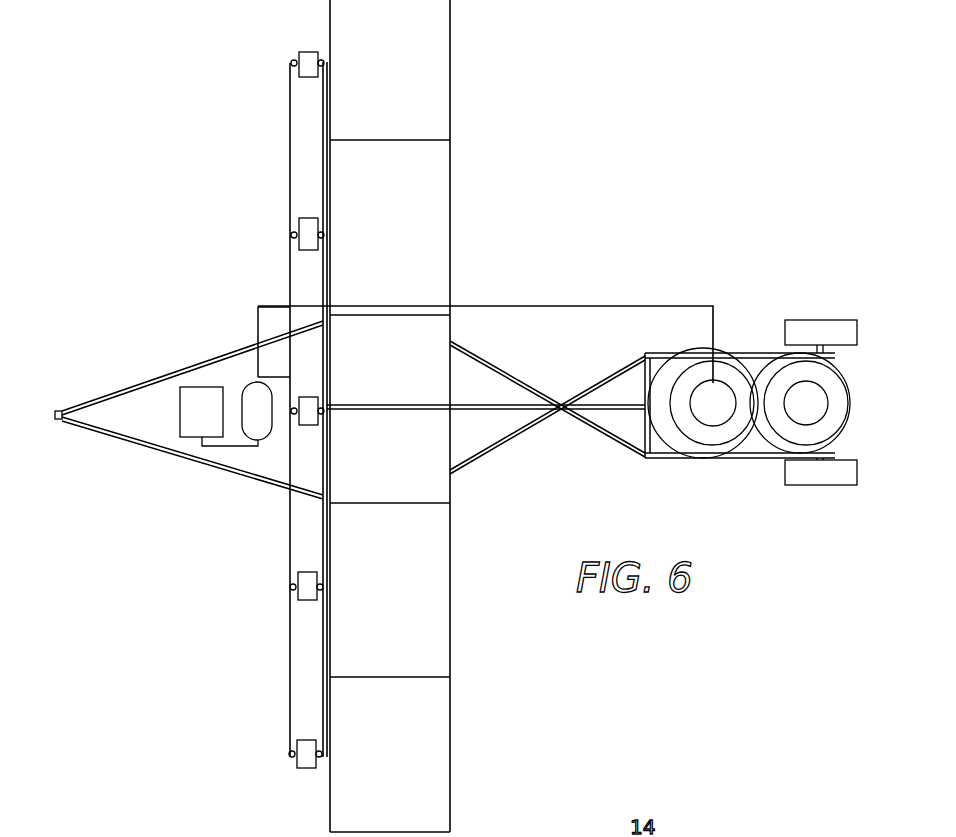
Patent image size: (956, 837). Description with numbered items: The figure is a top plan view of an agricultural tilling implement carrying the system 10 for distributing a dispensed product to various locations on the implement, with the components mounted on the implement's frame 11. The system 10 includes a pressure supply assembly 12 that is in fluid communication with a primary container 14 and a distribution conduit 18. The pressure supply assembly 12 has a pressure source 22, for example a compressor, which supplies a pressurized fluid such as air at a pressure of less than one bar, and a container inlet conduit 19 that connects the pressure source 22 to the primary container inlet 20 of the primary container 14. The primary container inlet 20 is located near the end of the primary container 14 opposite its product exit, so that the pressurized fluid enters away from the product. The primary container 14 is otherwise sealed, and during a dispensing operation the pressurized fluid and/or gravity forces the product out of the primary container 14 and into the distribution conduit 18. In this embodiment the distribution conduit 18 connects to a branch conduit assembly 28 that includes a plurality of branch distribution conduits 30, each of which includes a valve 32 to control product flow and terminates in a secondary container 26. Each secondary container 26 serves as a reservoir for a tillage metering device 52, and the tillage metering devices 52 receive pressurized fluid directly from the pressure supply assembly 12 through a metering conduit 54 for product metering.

The system 10 is at (664, 265).
The frame 11 is at (486, 457).
The pressure supply assembly 12 is at (243, 370).
The primary container 14 is at (735, 366).
The distribution conduit 18 is at (500, 405).
The container inlet conduit 19 is at (522, 306).
The primary container inlet 20 is at (712, 382).
The pressure source 22 is at (178, 405).
The secondary container 26 is at (305, 77).
The branch conduit assembly 28 is at (343, 396).
The branch distribution conduits 30 is at (322, 205).
The valve 32 is at (322, 60).
The tillage metering device 52 is at (288, 62).
The metering conduit 54 is at (288, 502).